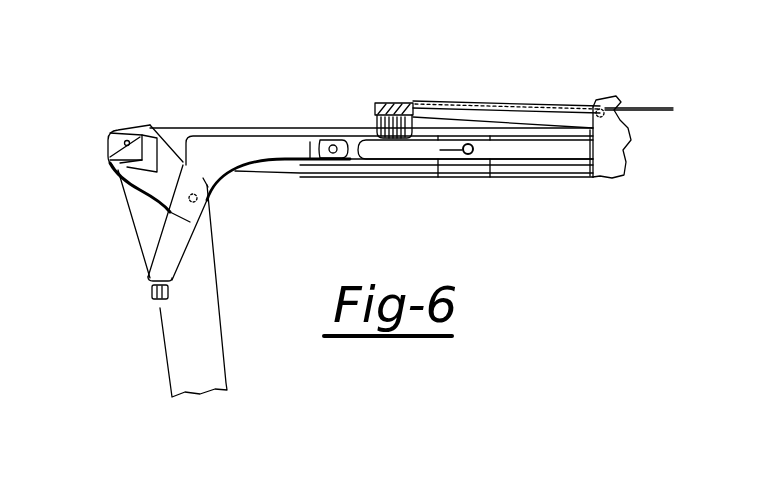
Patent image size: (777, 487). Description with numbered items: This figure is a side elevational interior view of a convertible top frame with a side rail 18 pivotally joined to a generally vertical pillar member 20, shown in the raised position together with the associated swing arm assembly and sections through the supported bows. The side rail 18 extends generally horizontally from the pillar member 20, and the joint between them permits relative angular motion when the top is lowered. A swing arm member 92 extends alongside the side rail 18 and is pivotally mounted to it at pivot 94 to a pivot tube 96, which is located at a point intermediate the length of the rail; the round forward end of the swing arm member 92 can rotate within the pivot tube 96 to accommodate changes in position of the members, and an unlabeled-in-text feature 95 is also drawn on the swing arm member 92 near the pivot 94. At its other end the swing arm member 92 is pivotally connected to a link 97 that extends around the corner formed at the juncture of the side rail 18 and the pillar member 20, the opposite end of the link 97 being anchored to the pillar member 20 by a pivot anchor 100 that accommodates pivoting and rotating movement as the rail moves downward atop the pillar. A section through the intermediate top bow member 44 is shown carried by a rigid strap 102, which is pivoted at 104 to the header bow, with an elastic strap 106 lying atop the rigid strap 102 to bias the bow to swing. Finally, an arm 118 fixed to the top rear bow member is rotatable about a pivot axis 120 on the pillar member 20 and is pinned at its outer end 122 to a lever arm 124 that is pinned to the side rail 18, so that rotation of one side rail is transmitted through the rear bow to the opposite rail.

The side rail 18 is at (518, 175).
The pillar member 20 is at (172, 327).
The intermediate top bow member 44 is at (397, 102).
The swing arm member 92 is at (427, 152).
The pivot 94 is at (470, 155).
The slot 95 is at (457, 163).
The pivot tube 96 is at (577, 150).
The link 97 is at (208, 186).
The pivot anchor 100 is at (150, 290).
The rigid strap 102 is at (508, 104).
The pivot 104 is at (613, 120).
The elastic strap 106 is at (580, 102).
The arm 118 is at (140, 126).
The pivot axis 120 is at (126, 140).
The outer end 122 is at (198, 196).
The lever arm 124 is at (205, 145).